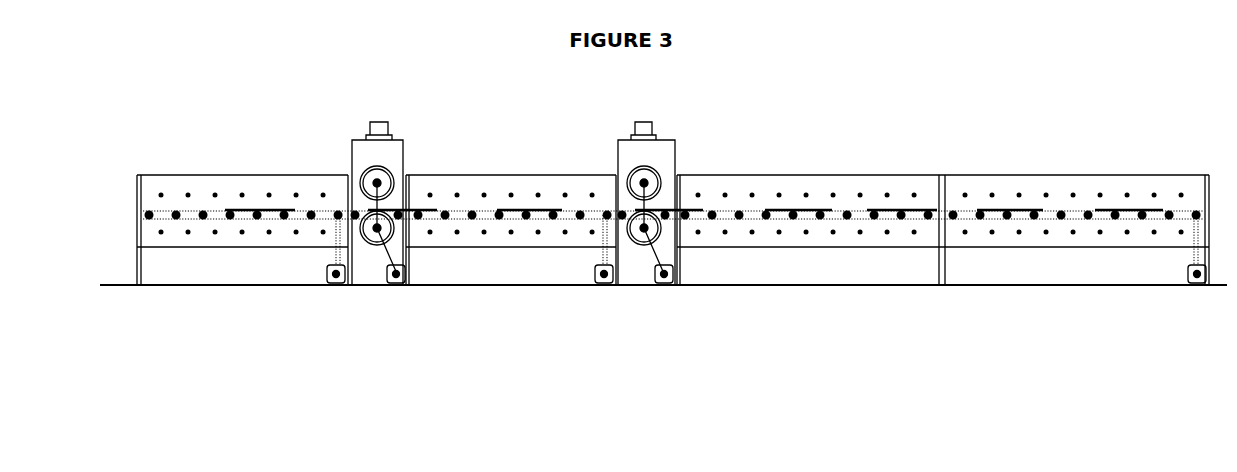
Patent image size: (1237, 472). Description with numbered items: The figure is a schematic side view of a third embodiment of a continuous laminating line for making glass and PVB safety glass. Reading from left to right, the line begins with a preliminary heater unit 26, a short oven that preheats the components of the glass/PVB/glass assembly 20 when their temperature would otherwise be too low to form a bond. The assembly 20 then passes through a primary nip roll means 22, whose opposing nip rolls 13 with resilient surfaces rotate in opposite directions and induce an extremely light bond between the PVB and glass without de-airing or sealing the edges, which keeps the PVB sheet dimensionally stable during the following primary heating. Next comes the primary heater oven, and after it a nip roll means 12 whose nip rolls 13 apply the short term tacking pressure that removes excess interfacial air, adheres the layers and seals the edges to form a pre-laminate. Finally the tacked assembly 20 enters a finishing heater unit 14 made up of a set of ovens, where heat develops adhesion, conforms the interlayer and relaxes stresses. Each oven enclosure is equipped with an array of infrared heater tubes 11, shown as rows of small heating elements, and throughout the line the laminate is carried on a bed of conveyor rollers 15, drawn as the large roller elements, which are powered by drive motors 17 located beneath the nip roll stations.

The infrared heater tubes 11 is at (700, 193).
The nip roll means 12 is at (672, 130).
The nip rolls 13 is at (636, 162).
The finishing heater unit 14 is at (981, 298).
The conveyor rollers 15 is at (1055, 212).
The drive motor 17 is at (398, 282).
The glass/PVB/glass assembly 20 is at (500, 210).
The primary nip roll means 22 is at (350, 127).
The preliminary heater unit 26 is at (242, 168).